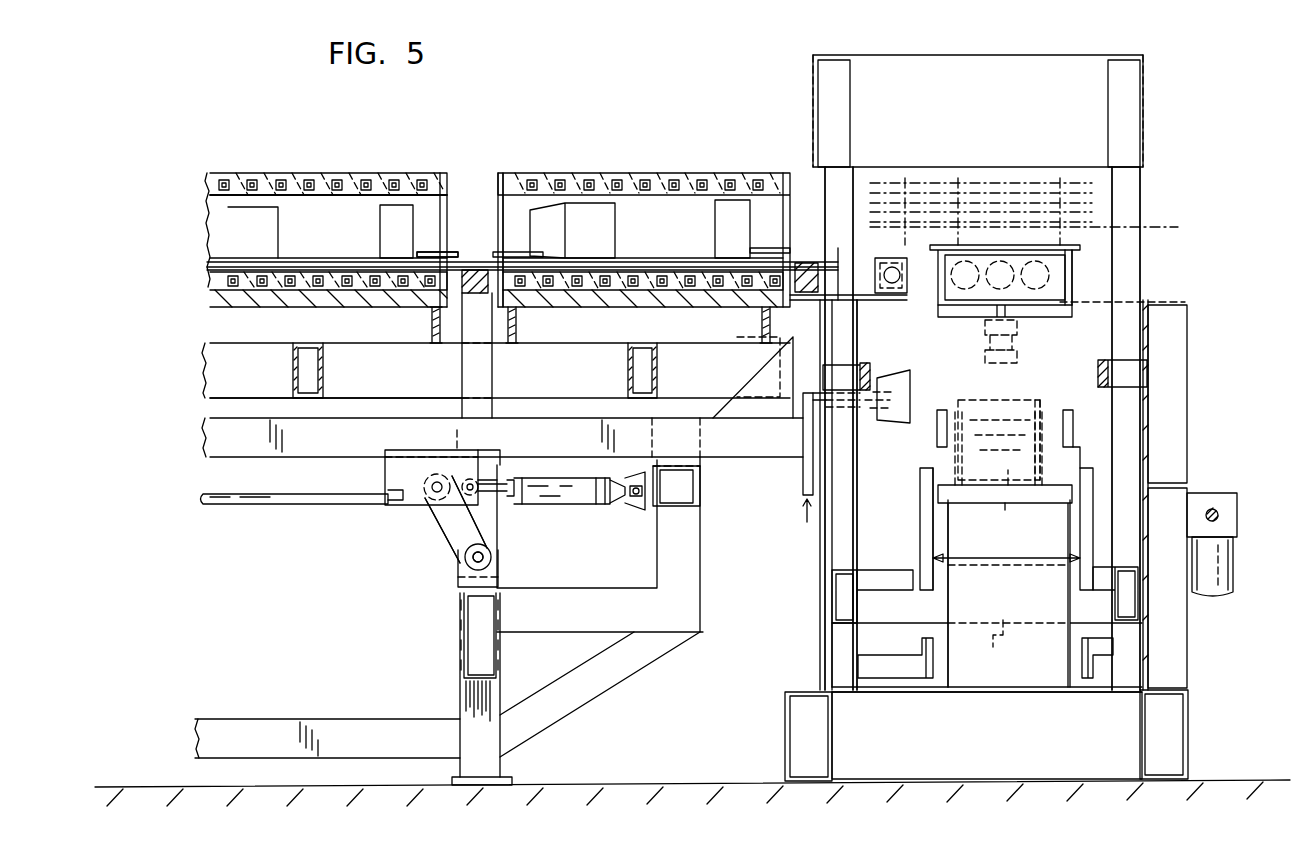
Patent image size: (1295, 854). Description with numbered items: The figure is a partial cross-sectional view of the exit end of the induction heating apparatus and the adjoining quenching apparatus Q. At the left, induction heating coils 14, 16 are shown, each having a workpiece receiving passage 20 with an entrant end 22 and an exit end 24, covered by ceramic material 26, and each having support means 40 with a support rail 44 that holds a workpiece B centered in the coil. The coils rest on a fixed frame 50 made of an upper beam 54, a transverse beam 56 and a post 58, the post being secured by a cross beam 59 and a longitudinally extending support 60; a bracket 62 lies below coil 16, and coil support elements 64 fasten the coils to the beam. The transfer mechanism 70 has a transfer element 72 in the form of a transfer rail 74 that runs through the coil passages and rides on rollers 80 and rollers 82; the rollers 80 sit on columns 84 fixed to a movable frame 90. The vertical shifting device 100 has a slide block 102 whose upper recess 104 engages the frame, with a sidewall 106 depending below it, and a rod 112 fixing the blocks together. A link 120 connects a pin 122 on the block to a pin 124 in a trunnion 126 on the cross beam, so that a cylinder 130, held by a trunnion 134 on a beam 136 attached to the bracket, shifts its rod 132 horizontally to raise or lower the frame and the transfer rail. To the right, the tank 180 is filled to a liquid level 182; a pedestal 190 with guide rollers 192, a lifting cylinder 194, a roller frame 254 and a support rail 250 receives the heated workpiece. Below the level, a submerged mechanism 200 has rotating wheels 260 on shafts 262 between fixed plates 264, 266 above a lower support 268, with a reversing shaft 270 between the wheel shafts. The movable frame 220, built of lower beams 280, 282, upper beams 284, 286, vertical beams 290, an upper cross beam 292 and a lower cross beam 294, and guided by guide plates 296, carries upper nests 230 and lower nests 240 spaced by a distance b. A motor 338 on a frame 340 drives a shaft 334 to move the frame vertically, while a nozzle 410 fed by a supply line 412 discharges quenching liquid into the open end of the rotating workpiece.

The induction heating coil 14 is at (325, 178).
The induction heating coil 16 is at (552, 173).
The workpiece receiving passage 20 is at (446, 190).
The entrant end 22 is at (498, 210).
The exit end 24 is at (448, 218).
The conveyor chain 26 is at (325, 178).
The support means 40 is at (426, 245).
The support rail 44 is at (458, 252).
The fixed frame 50 is at (577, 720).
The upper beam 54 is at (602, 343).
The transverse beam 56 is at (323, 376).
The post 58 is at (498, 524).
The cross beam 59 is at (496, 654).
The longitudinally extending support 60 is at (366, 718).
The bracket 62 is at (702, 584).
The coil support element 64 is at (430, 329).
The transfer mechanism 70 is at (389, 538).
The transfer element 72 is at (836, 246).
The transfer rail 74 is at (542, 258).
The roller 80 is at (474, 266).
The roller 82 is at (876, 264).
The column 84 is at (492, 376).
The movable frame 90 is at (762, 462).
The vertical shifting device 100 is at (414, 560).
The slide block 102 is at (386, 508).
The upper recess 104 is at (462, 450).
The sidewall 106 is at (480, 468).
The rod 112 is at (292, 510).
The link 120 is at (448, 556).
The pin 122 is at (430, 476).
The pin 124 is at (490, 553).
The trunnion 126 is at (498, 571).
The cylinder 130 is at (584, 504).
The rod 132 is at (520, 474).
The trunnion 134 is at (625, 516).
The beam 136 is at (700, 496).
The tank 180 is at (1170, 334).
The liquid level 182 is at (1131, 291).
The pedestal 190 is at (1070, 290).
The guide roller 192 is at (1008, 242).
The lifting cylinder 194 is at (1020, 338).
The submerged mechanism 200 is at (1083, 422).
The movable frame 220 is at (861, 545).
The upper nest 230 is at (919, 480).
The lower nest 240 is at (916, 648).
The support rail 250 is at (1118, 232).
The roller frame 254 is at (1052, 312).
The rotating wheel 260 is at (936, 442).
The shaft 262 is at (994, 424).
The fixed plate 264 is at (927, 410).
The fixed plate 266 is at (1046, 408).
The press base 268 is at (1020, 687).
The reversing shaft 270 is at (1018, 503).
The lower beam 280 is at (1114, 560).
The lower beam 282 is at (862, 576).
The upper beam 284 is at (1142, 82).
The upper beam 286 is at (856, 62).
The vertical beam 290 is at (855, 180).
The upper cross beam 292 is at (988, 62).
The lower cross beam 294 is at (1001, 645).
The guide plate 296 is at (870, 370).
The shaft 334 is at (1216, 514).
The motor 338 is at (1228, 567).
The frame 340 is at (1182, 448).
The nozzle 410 is at (818, 404).
The supply line 412 is at (802, 492).
The workpiece B is at (433, 204).
The distance b is at (1006, 583).
The quenching apparatus Q is at (1200, 263).